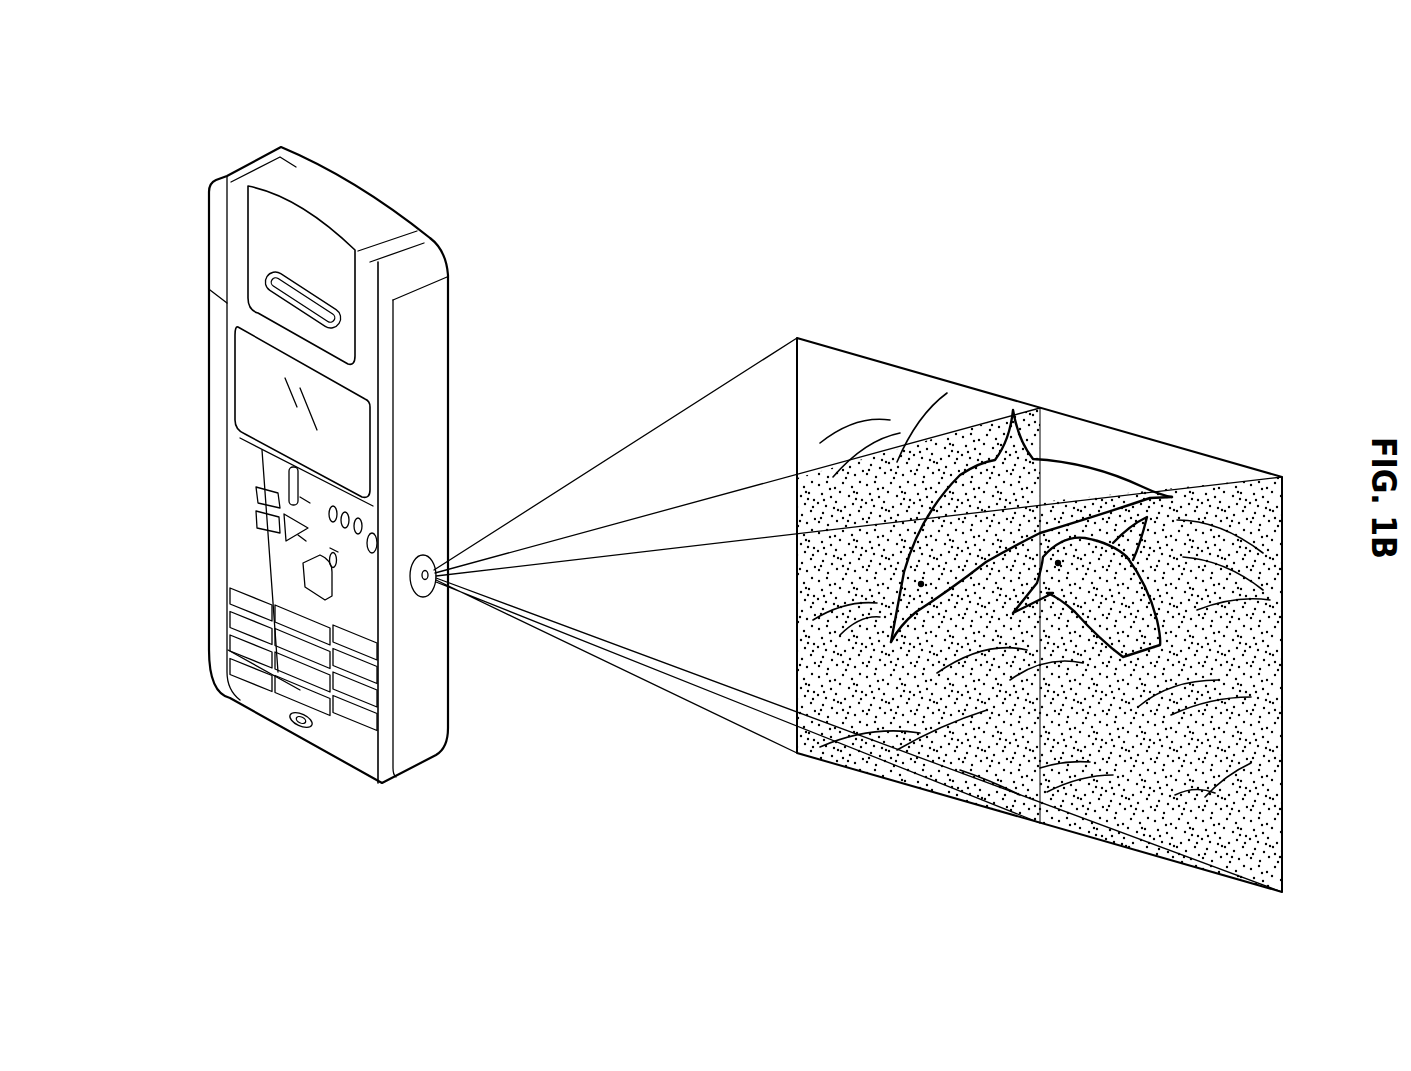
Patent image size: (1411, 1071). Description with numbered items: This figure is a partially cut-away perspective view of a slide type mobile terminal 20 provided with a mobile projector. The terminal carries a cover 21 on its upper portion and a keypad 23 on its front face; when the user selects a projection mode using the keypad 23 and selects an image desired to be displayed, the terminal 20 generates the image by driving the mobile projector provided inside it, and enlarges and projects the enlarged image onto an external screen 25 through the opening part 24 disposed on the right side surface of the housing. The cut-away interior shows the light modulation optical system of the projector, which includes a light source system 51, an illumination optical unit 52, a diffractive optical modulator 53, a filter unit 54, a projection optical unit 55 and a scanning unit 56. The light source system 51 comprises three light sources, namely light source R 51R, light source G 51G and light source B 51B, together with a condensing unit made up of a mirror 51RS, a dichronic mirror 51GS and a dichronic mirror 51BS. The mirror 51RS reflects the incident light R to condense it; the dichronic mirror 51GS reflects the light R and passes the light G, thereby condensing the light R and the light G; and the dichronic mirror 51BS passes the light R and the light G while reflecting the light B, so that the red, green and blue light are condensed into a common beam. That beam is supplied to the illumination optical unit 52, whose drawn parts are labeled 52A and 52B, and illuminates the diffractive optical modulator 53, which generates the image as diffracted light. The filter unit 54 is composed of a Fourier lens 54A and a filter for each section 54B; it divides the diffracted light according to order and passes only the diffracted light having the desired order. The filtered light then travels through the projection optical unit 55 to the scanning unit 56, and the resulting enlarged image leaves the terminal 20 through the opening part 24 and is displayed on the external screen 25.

The slide type mobile terminal 20 is at (470, 209).
The cover 21 is at (343, 196).
The keypad 23 is at (307, 687).
The opening part 24 is at (428, 558).
The external screen 25 is at (893, 365).
The light source system 51 is at (108, 483).
The light source R 51R is at (256, 497).
The light source G 51G is at (256, 522).
The light source B 51B is at (303, 577).
The mirror 51RS is at (300, 540).
The dichronic mirror 51GS is at (330, 560).
The dichronic mirror 51BS is at (303, 590).
The illumination optical unit 52 is at (547, 655).
The horizontal scanning mirror 52A is at (300, 537).
The vertical scanning mirror 52B is at (250, 473).
The diffractive optical modulator 53 is at (288, 478).
The filter unit 54 is at (528, 383).
The Fourier lens 54A is at (334, 507).
The filter for each section 54B is at (347, 513).
The projection optical unit 55 is at (360, 519).
The scanning unit 56 is at (374, 534).